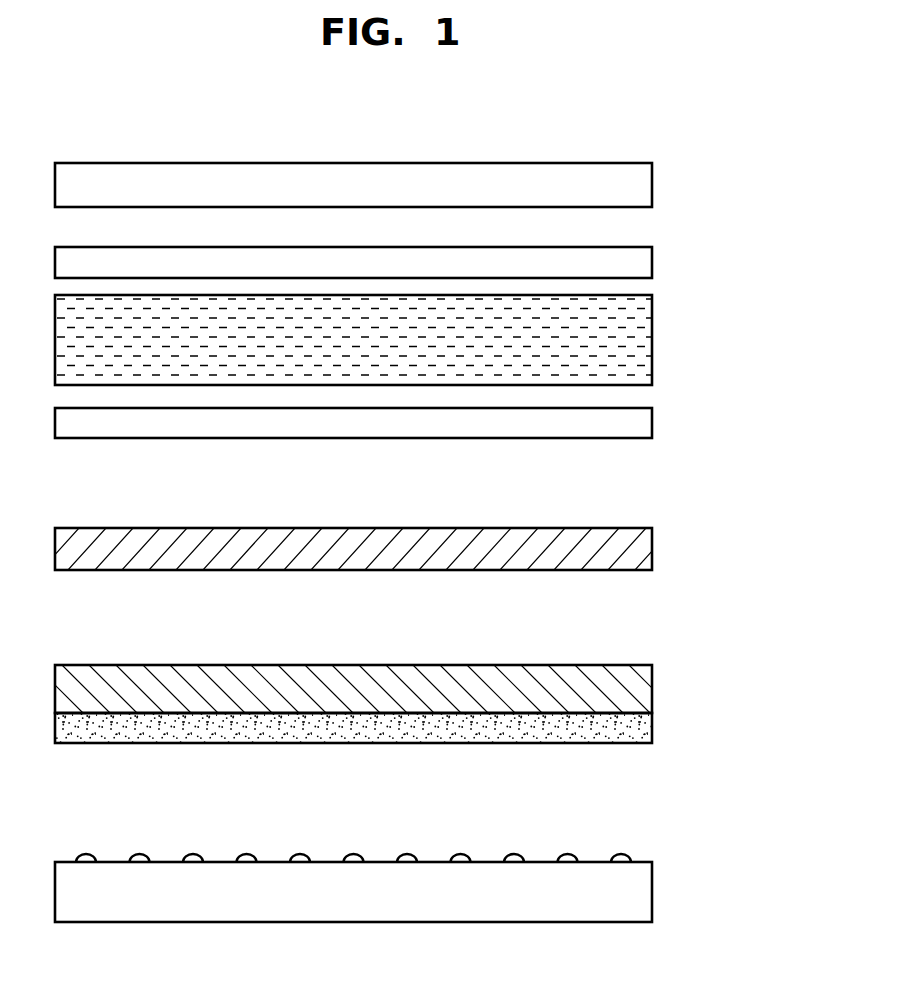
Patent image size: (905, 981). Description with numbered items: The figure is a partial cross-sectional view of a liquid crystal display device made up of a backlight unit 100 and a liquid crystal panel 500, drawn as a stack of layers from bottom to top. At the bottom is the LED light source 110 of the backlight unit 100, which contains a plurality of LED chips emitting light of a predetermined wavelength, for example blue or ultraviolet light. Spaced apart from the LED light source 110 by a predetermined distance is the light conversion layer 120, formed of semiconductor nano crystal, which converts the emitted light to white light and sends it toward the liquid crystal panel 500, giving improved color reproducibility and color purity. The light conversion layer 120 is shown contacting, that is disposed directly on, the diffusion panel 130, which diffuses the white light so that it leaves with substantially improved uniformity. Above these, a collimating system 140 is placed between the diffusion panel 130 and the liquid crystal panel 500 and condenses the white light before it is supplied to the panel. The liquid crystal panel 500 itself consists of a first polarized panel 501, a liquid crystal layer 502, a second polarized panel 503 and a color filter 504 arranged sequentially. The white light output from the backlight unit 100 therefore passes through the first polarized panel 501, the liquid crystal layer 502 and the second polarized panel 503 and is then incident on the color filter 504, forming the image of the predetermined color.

The backlight unit 100 is at (410, 746).
The LED light source 110 is at (395, 888).
The light conversion layer 120 is at (652, 728).
The diffusion panel 130 is at (652, 690).
The collimating system 140 is at (652, 550).
The liquid crystal panel 500 is at (433, 300).
The first polarized panel 501 is at (395, 423).
The liquid crystal layer 502 is at (652, 342).
The second polarized panel 503 is at (652, 263).
The color filter 504 is at (652, 185).